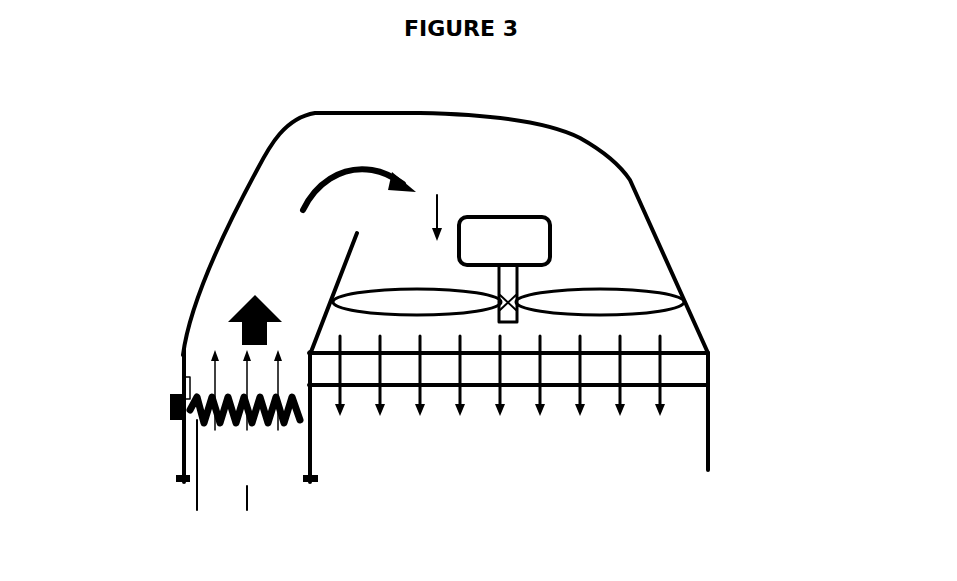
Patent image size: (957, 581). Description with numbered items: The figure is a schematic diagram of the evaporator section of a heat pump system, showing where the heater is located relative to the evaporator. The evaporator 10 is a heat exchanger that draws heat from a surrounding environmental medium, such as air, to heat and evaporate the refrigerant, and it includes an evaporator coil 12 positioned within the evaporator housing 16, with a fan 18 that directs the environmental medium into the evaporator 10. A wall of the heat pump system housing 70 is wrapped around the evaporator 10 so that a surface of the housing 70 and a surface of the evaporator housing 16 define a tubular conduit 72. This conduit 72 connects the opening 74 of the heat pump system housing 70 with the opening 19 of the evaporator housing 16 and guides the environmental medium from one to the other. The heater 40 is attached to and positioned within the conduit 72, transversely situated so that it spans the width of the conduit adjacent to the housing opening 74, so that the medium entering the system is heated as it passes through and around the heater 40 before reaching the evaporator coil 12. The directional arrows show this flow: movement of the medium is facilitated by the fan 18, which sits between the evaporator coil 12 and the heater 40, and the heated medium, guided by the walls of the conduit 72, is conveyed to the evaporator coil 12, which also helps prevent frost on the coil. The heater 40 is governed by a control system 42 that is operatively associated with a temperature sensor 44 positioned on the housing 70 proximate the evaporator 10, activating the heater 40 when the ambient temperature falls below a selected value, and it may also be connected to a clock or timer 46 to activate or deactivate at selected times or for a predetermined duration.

The evaporator 10 is at (735, 258).
The evaporator coil 12 is at (708, 369).
The evaporator housing 16 is at (311, 448).
The fan 18 is at (550, 225).
The opening of evaporator housing 19 is at (377, 196).
The heater 40 is at (198, 486).
The control system 42 is at (184, 377).
The temperature sensor 44 is at (184, 481).
The clock or timer 46 is at (300, 407).
The heat pump system housing 70 is at (632, 175).
The conduit 72 is at (260, 222).
The opening of heat pump system housing 74 is at (245, 519).